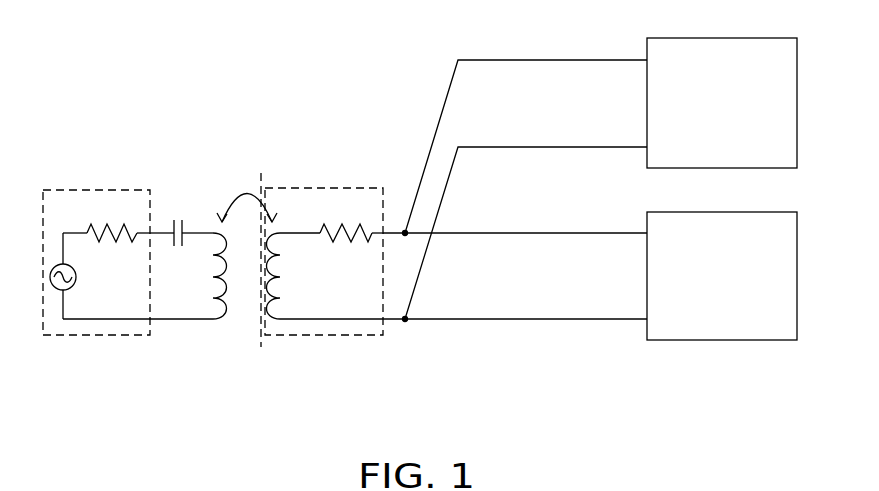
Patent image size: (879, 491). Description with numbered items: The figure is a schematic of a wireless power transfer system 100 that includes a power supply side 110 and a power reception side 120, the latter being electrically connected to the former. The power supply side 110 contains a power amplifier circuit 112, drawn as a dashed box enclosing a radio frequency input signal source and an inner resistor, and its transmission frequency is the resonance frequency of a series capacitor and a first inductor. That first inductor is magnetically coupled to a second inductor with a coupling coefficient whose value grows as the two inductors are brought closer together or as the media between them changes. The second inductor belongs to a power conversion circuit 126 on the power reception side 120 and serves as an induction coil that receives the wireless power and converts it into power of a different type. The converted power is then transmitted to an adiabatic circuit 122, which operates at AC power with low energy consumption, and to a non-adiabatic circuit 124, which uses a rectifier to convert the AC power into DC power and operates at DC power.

The wireless power transfer system 100 is at (108, 406).
The power supply side 110 is at (151, 132).
The power amplifier circuit 112 is at (87, 190).
The power reception side 120 is at (361, 80).
The adiabatic circuit 122 is at (735, 212).
The non-adiabatic circuit 124 is at (735, 38).
The power conversion circuit 126 is at (338, 188).